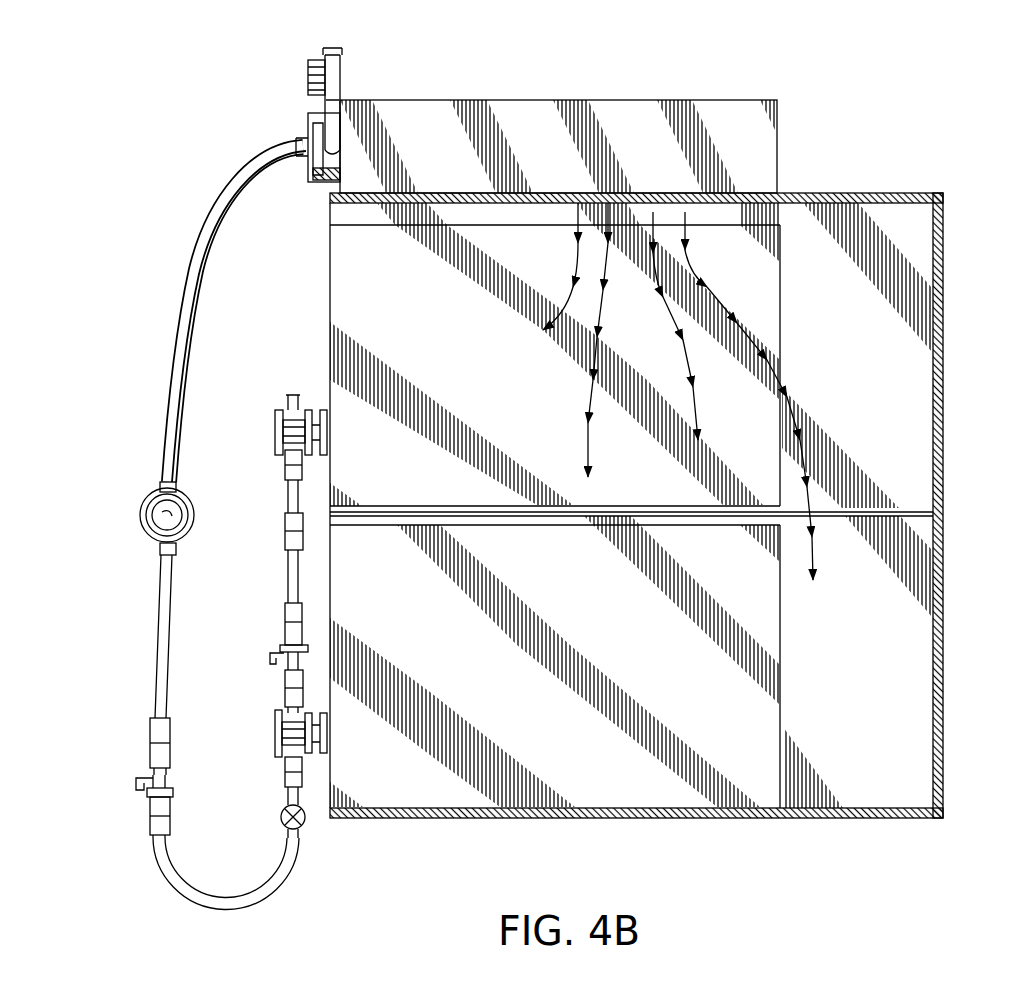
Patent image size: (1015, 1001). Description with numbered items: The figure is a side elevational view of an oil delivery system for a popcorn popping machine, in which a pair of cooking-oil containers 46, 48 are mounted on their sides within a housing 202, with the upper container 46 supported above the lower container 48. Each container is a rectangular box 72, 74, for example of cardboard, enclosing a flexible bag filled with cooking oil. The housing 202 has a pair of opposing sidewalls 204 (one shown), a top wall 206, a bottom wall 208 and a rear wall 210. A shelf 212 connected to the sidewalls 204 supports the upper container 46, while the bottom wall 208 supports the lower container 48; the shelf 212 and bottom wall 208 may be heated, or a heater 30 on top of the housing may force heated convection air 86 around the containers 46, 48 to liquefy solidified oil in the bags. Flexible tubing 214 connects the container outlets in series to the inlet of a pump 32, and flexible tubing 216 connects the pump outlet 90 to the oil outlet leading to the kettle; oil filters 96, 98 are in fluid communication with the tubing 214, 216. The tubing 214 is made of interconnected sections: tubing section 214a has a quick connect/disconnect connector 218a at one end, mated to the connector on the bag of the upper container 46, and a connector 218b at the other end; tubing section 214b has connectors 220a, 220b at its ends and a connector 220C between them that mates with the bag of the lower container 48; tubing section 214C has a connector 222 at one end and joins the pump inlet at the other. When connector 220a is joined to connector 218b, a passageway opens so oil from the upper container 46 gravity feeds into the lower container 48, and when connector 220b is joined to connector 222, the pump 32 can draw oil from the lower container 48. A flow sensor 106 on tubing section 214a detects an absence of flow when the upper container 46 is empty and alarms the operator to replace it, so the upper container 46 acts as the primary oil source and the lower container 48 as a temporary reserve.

The heater 30 is at (493, 100).
The pump 32 is at (310, 120).
The upper container 46 is at (786, 330).
The lower container 48 is at (786, 672).
The rectangular box 72 is at (498, 356).
The rectangular box 74 is at (569, 578).
The heated convection air 86 is at (571, 275).
The pump outlet 90 is at (325, 180).
The oil filter 96 is at (141, 517).
The oil filter 98 is at (310, 83).
The flow sensor 106 is at (285, 542).
The housing 202 is at (669, 505).
The sidewall 204 is at (874, 371).
The top wall 206 is at (862, 193).
The bottom wall 208 is at (872, 818).
The rear wall 210 is at (944, 478).
The shelf 212 is at (901, 512).
The flexible tubing 214 is at (284, 578).
The tubing section 214a is at (287, 498).
The tubing section 214b is at (229, 898).
The tubing section 214C is at (172, 452).
The flexible tubing 216 is at (340, 127).
The quick connect/disconnect connector 218a is at (276, 430).
The quick connect/disconnect connector 218b is at (285, 624).
The quick connect/disconnect connector 220a is at (285, 688).
The quick connect/disconnect connector 220b is at (150, 815).
The quick connect/disconnect connector 220C is at (276, 733).
The quick connect/disconnect connector 222 is at (150, 742).